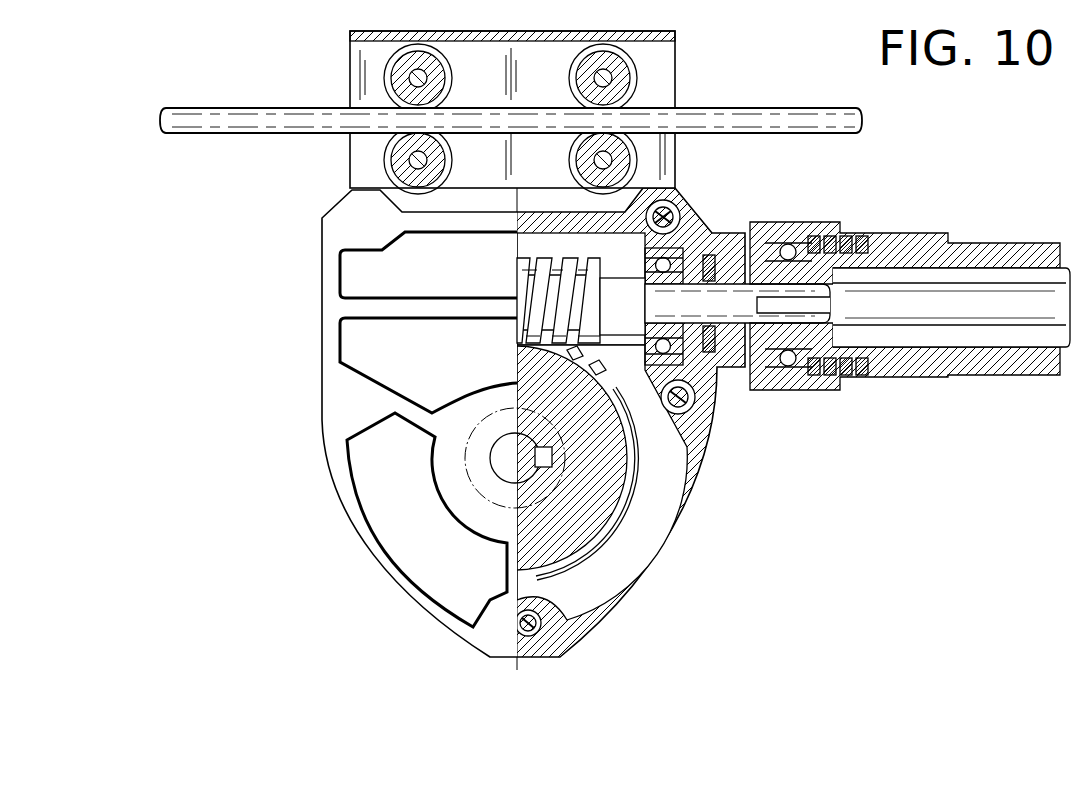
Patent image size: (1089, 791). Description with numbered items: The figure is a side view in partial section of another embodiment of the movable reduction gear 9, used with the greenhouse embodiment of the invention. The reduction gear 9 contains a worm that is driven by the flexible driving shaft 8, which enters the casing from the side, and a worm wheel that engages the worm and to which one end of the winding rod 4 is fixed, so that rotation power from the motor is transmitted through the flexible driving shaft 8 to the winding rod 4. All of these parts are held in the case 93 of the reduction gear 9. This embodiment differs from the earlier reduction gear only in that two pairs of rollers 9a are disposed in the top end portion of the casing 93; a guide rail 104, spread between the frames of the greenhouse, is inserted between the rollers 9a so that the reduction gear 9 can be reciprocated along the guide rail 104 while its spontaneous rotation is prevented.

The movable reduction gear 9 is at (690, 553).
The rollers 9a is at (655, 73).
The case 93 is at (330, 231).
The winding rod 4 is at (467, 465).
The flexible driving shaft 8 is at (997, 330).
The guide rail 104 is at (790, 110).